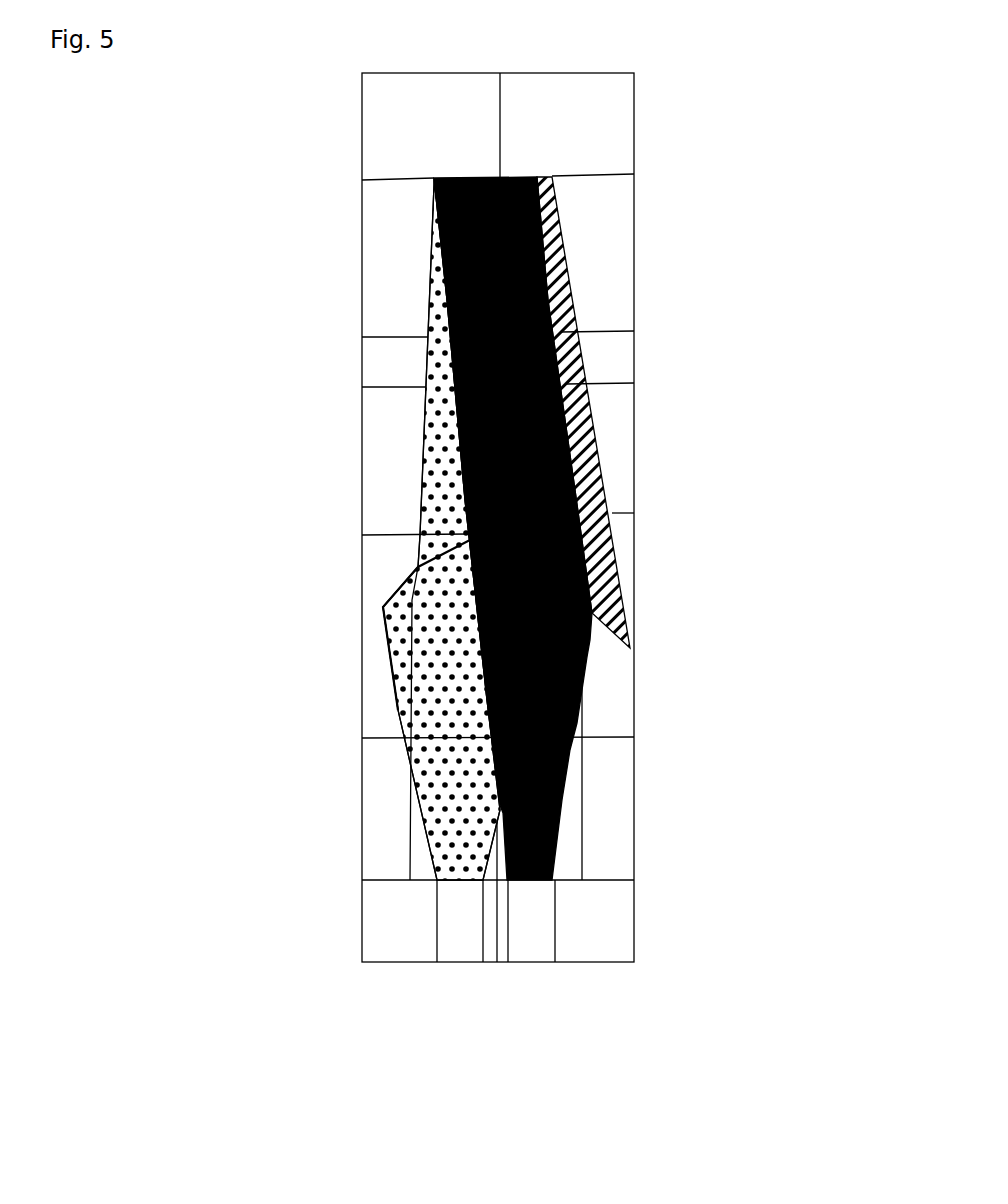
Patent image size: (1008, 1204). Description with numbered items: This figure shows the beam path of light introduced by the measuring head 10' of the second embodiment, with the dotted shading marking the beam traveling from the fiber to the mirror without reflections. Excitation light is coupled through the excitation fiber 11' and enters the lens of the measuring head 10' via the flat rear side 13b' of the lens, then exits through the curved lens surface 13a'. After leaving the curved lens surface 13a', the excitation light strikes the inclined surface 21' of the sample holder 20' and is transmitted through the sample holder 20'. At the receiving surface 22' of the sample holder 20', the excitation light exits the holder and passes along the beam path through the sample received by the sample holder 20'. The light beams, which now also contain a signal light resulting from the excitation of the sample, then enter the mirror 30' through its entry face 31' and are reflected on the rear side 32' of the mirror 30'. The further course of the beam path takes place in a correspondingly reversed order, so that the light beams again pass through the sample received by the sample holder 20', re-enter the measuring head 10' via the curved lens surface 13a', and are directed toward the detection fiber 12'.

The measuring head 10' is at (618, 517).
The excitation fiber 11' is at (436, 613).
The detection fiber 12' is at (532, 603).
The curved lens surface 13a' is at (373, 675).
The flat rear side 13b' is at (449, 636).
The sample holder 20' is at (683, 412).
The inclined surface 21' is at (677, 542).
The receiving surface 22' is at (556, 412).
The mirror 30' is at (681, 215).
The entry face 31' is at (556, 357).
The rear side 32' is at (556, 202).